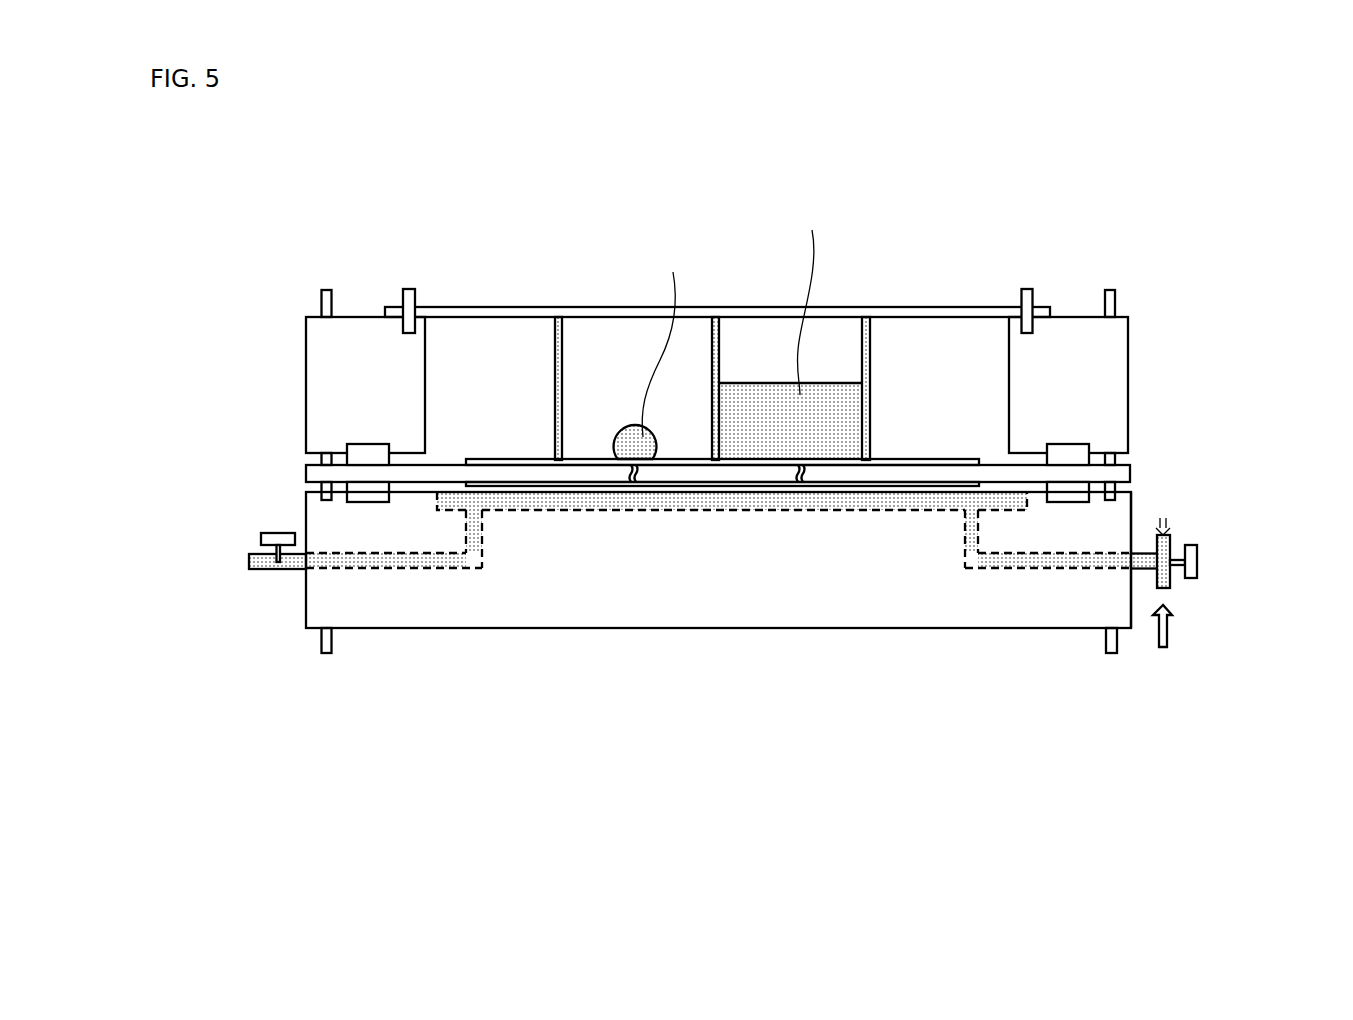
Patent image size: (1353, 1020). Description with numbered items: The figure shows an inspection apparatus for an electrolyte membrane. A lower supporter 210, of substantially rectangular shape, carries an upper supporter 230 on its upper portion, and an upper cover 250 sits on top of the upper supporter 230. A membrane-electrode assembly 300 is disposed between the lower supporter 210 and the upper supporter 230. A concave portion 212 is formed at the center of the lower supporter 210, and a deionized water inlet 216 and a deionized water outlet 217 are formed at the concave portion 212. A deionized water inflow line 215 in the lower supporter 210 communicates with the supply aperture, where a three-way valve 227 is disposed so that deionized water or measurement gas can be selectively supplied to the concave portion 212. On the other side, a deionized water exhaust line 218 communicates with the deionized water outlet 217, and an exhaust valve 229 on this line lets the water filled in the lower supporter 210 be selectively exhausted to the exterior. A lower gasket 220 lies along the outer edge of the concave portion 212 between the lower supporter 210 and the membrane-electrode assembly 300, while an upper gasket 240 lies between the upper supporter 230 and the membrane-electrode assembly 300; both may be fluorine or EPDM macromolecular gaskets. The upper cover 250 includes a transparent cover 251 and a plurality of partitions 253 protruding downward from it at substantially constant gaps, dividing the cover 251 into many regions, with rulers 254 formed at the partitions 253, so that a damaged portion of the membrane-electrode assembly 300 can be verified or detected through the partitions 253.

The lower supporter 210 is at (291, 593).
The concave portion 212 is at (782, 510).
The deionized water inflow line 215 is at (1050, 570).
The deionized water inlet 216 is at (968, 508).
The deionized water outlet 217 is at (490, 497).
The deionized water exhaust line 218 is at (405, 570).
The lower gasket 220 is at (1128, 493).
The three-way valve 227 is at (1182, 588).
The exhaust valve 229 is at (248, 536).
The upper supporter 230 is at (290, 385).
The upper gasket 240 is at (1072, 446).
The upper cover 250 is at (651, 321).
The cover 251 is at (928, 313).
The partitions 253 is at (553, 357).
The rulers 254 is at (562, 340).
The membrane-electrode assembly 300 is at (293, 468).